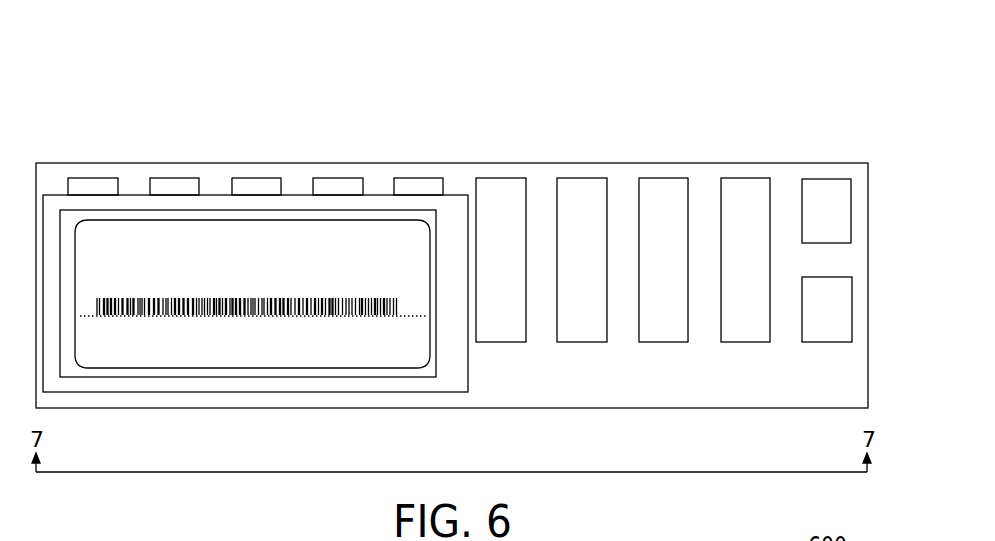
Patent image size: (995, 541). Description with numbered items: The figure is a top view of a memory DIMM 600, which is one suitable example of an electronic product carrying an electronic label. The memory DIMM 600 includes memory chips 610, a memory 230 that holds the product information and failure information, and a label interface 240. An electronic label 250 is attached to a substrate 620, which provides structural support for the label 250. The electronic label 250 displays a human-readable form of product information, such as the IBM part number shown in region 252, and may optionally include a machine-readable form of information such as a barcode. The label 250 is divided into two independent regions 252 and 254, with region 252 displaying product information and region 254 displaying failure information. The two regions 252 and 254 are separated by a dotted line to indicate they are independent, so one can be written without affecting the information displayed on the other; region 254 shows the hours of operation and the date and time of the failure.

The memory DIMM 600 is at (805, 90).
The memory chips 610 is at (95, 178).
The substrate 620 is at (468, 367).
The electronic label 250 is at (278, 247).
The region 252 is at (403, 282).
The region 254 is at (400, 340).
The memory 230 is at (845, 220).
The label interface 240 is at (845, 319).